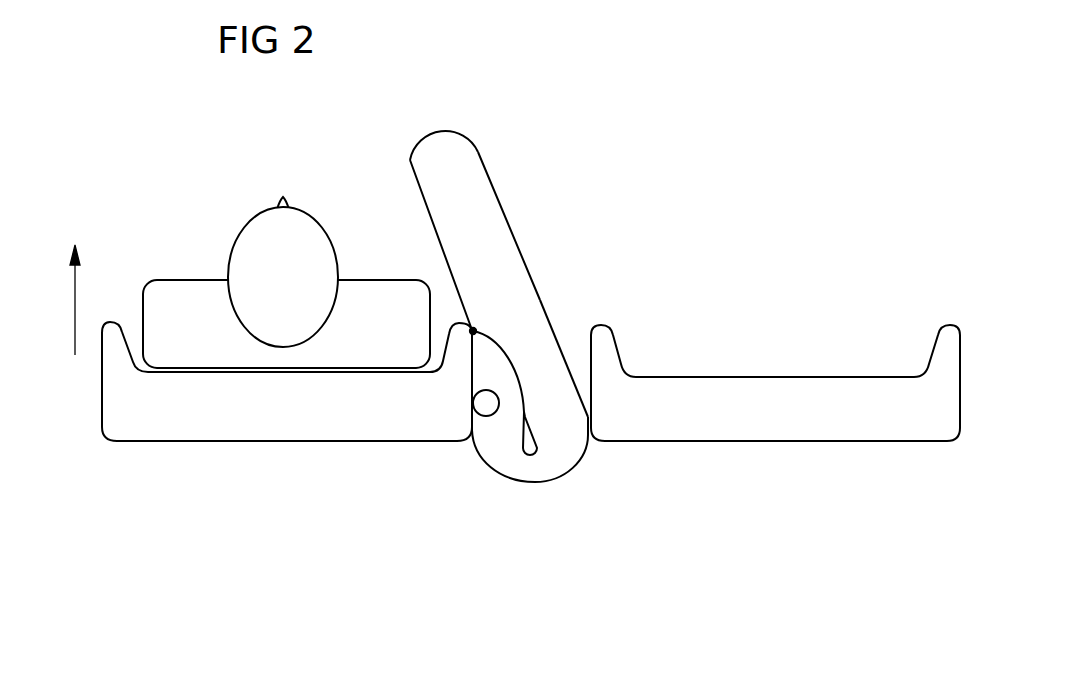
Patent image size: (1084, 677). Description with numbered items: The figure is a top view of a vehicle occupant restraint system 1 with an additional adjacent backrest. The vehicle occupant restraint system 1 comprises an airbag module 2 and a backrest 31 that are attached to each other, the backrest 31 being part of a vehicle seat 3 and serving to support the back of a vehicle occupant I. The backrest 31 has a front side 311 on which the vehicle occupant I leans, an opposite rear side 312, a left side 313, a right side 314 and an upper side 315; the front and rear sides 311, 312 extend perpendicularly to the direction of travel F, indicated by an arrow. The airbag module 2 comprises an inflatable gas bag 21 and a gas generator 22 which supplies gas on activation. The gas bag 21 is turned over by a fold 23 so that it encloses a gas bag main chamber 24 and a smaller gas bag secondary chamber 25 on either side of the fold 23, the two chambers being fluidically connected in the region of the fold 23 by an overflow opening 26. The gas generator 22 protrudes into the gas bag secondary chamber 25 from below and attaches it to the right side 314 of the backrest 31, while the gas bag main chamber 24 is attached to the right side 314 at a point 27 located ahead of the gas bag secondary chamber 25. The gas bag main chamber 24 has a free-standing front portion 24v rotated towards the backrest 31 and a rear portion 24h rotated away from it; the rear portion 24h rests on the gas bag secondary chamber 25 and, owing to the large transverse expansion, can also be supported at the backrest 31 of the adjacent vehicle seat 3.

The vehicle occupant restraint system 1 is at (603, 147).
The airbag module 2 is at (559, 547).
The vehicle seat 3 is at (193, 427).
The backrest 31 is at (763, 435).
The front side 311 is at (137, 362).
The rear side 312 is at (295, 445).
The left side 313 is at (98, 420).
The right side 314 is at (452, 398).
The upper side 315 is at (365, 422).
The gas bag 21 is at (582, 460).
The gas generator 22 is at (497, 390).
The fold 23 is at (538, 443).
The gas bag main chamber 24 is at (492, 245).
The front portion 24v is at (452, 163).
The rear portion 24h is at (572, 407).
The gas bag secondary chamber 25 is at (502, 448).
The overflow opening 26 is at (538, 463).
The point 27 is at (475, 329).
The vehicle occupant I is at (197, 295).
The direction of travel F is at (67, 300).